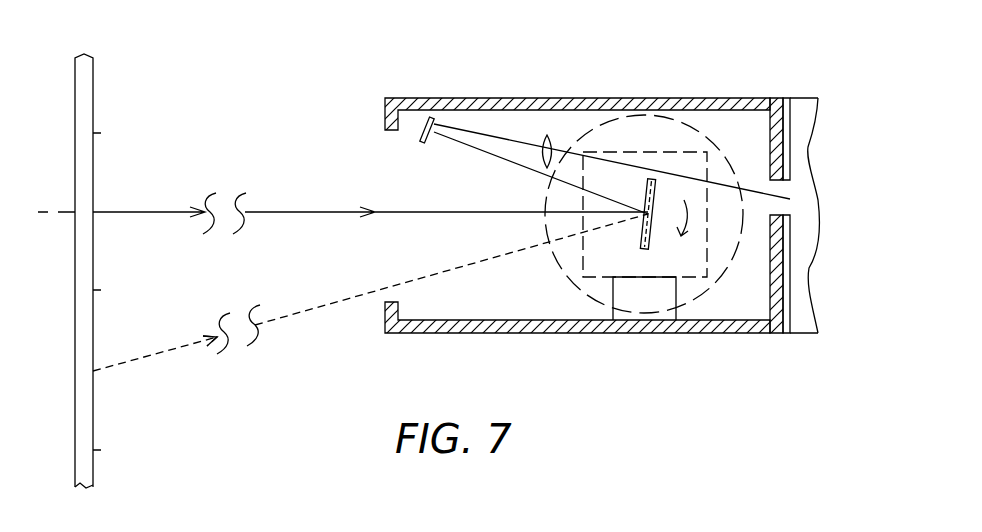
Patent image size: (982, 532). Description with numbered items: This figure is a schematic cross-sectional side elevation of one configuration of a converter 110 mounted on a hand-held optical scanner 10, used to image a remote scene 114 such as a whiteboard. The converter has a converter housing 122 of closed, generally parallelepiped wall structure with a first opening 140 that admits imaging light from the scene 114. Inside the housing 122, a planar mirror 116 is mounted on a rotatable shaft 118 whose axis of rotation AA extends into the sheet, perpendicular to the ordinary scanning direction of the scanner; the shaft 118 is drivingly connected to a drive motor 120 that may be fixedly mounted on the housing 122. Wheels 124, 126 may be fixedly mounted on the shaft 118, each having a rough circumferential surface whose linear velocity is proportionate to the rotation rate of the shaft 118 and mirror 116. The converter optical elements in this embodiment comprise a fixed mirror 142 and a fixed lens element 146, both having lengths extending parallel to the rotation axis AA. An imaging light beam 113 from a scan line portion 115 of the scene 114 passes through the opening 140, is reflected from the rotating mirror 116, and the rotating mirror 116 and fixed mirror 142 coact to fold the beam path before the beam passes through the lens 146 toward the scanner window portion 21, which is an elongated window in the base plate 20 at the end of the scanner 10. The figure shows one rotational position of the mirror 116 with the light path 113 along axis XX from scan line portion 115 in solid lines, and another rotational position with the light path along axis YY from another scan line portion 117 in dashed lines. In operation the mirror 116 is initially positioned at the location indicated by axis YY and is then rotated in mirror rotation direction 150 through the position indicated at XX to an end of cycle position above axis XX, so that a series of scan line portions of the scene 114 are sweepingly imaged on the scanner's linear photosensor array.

The scanner 10 is at (808, 337).
The base plate 20 is at (783, 125).
The elongated window portion 21 is at (780, 197).
The converter 110 is at (584, 227).
The imaging light beam 113 is at (324, 212).
The scene 114 is at (93, 172).
The scan line portion 115 is at (93, 212).
The planar mirror 116 is at (658, 181).
The scan line portion 117 is at (93, 371).
The shaft 118 is at (652, 214).
The drive motor 120 is at (680, 337).
The converter housing 122 is at (505, 98).
The wheel 124 is at (577, 341).
The wheel 126 is at (710, 347).
The first opening 140 is at (390, 177).
The fixed mirror 142 is at (427, 117).
The fixed lens element 146 is at (548, 135).
The mirror rotation direction 150 is at (648, 214).
The axis XX is at (430, 214).
The axis YY is at (330, 306).
The axis of rotation AA is at (648, 214).